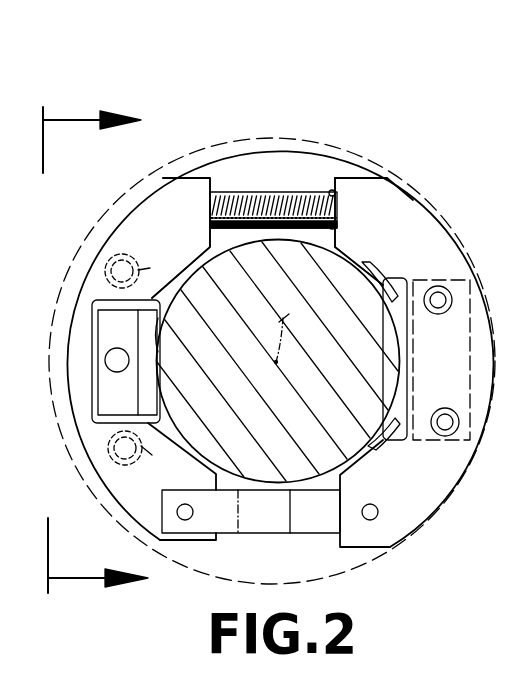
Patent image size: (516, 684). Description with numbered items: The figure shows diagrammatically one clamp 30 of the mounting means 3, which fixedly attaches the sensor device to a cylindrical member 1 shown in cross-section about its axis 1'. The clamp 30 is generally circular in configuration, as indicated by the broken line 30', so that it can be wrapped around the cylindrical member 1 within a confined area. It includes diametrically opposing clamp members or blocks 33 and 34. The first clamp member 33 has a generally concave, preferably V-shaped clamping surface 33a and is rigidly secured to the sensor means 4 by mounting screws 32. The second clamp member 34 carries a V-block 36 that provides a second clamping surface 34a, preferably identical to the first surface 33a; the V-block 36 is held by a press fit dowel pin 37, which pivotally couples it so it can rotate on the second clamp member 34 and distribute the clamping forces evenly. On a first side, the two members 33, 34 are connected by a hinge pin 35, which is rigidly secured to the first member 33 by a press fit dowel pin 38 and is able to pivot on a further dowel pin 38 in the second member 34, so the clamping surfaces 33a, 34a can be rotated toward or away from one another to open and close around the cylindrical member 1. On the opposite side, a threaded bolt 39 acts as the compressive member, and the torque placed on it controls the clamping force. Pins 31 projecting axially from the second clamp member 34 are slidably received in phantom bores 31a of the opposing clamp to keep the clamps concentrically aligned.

The cylindrical member 1 is at (278, 361).
The axis of the workpiece 1' is at (293, 335).
The mounting means 3 is at (95, 350).
The sensor means 4 is at (464, 458).
The clamp 30 is at (280, 349).
The outer circumference of housing 30' is at (272, 344).
The pins 31 is at (112, 260).
The bores 31a is at (150, 270).
The mounting screws 32 is at (432, 292).
The clamp member 33 is at (373, 213).
The clamping surface 33a is at (360, 263).
The second clamp member 34 is at (194, 214).
The second clamping surface 34a is at (157, 333).
The hinge pin 35 is at (255, 534).
The V-block 36 is at (136, 334).
The press fit dowel pin 37 is at (107, 356).
The dowel pin 38 is at (177, 510).
The threaded bolt 39 is at (260, 190).